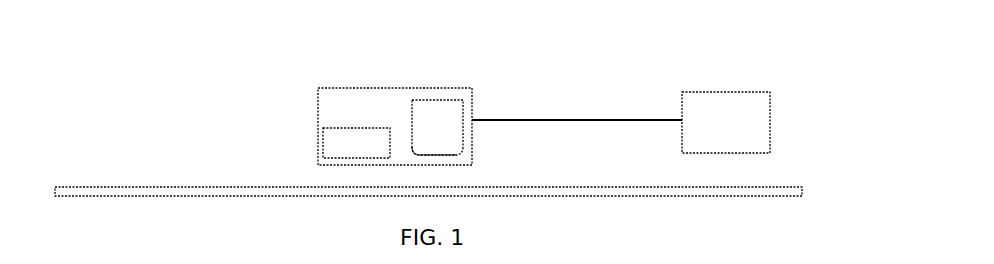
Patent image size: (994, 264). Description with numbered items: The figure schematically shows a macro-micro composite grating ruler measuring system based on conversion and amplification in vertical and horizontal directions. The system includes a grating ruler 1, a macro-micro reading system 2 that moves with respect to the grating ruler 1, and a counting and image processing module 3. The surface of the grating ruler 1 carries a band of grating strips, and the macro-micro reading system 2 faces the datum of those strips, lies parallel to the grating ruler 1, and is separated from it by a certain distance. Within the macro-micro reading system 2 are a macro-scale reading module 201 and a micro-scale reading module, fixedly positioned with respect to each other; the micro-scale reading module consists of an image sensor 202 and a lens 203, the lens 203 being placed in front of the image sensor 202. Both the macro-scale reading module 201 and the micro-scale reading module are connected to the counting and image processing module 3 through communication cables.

The grating ruler 1 is at (428, 134).
The macro-micro reading system 2 is at (382, 84).
The macro-scale reading module 201 is at (297, 99).
The image sensor 202 is at (467, 92).
The lens 203 is at (469, 152).
The counting and image processing module 3 is at (750, 76).